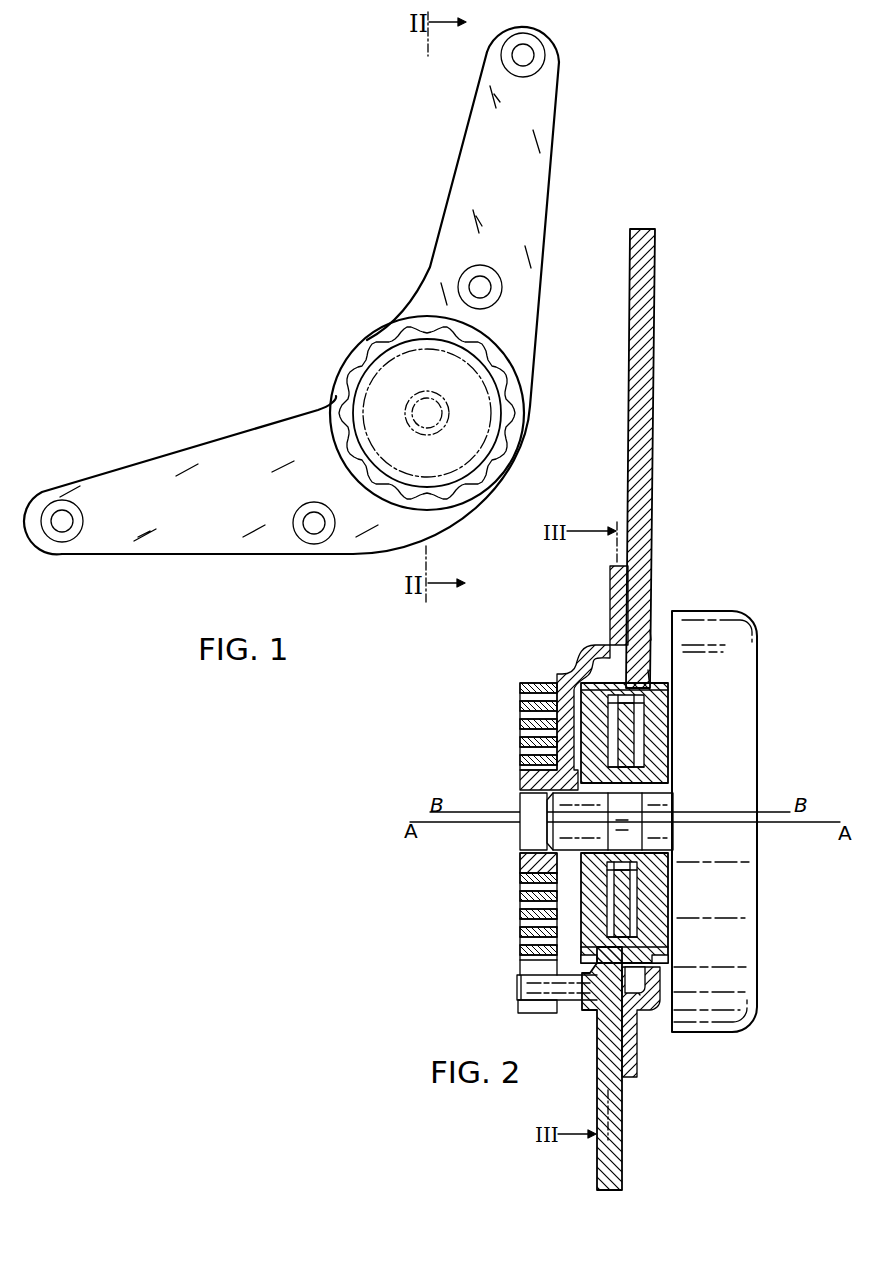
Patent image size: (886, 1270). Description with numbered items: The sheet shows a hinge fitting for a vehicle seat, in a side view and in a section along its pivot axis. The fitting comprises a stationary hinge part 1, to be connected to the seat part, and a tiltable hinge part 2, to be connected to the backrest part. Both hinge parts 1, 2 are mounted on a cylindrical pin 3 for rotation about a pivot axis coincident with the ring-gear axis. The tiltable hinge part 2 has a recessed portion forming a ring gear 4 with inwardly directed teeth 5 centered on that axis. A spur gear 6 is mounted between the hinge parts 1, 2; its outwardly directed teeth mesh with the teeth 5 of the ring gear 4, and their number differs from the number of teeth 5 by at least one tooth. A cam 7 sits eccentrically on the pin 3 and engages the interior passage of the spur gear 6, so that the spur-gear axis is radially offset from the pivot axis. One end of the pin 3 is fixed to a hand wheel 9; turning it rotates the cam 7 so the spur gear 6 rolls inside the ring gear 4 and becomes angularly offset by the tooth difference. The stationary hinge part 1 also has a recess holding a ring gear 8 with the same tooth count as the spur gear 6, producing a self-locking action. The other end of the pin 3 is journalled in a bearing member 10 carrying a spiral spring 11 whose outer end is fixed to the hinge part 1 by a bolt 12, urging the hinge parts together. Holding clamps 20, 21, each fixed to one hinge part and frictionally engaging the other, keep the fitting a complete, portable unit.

In FIG. 1, the stationary hinge part 1 is at (171, 546).
In FIG. 2, the stationary hinge part 1 is at (612, 1157).
In FIG. 1, the tiltable hinge part 2 is at (471, 157).
In FIG. 2, the tiltable hinge part 2 is at (647, 342).
In FIG. 2, the pin 3 is at (668, 838).
In FIG. 2, the ring gear 4 is at (650, 631).
In FIG. 2, the inwardly directed teeth 5 is at (648, 671).
In FIG. 2, the spur gear 6 is at (634, 741).
In FIG. 2, the cam 7 is at (631, 806).
In FIG. 2, the ring gear 8 is at (590, 661).
In FIG. 1, the hand wheel 9 is at (512, 423).
In FIG. 2, the bearing member 10 is at (518, 865).
In FIG. 2, the spiral spring 11 is at (518, 728).
In FIG. 2, the bolt 12 is at (518, 985).
In FIG. 2, the holding clamp 20 is at (608, 596).
In FIG. 2, the holding clamp 21 is at (638, 1068).